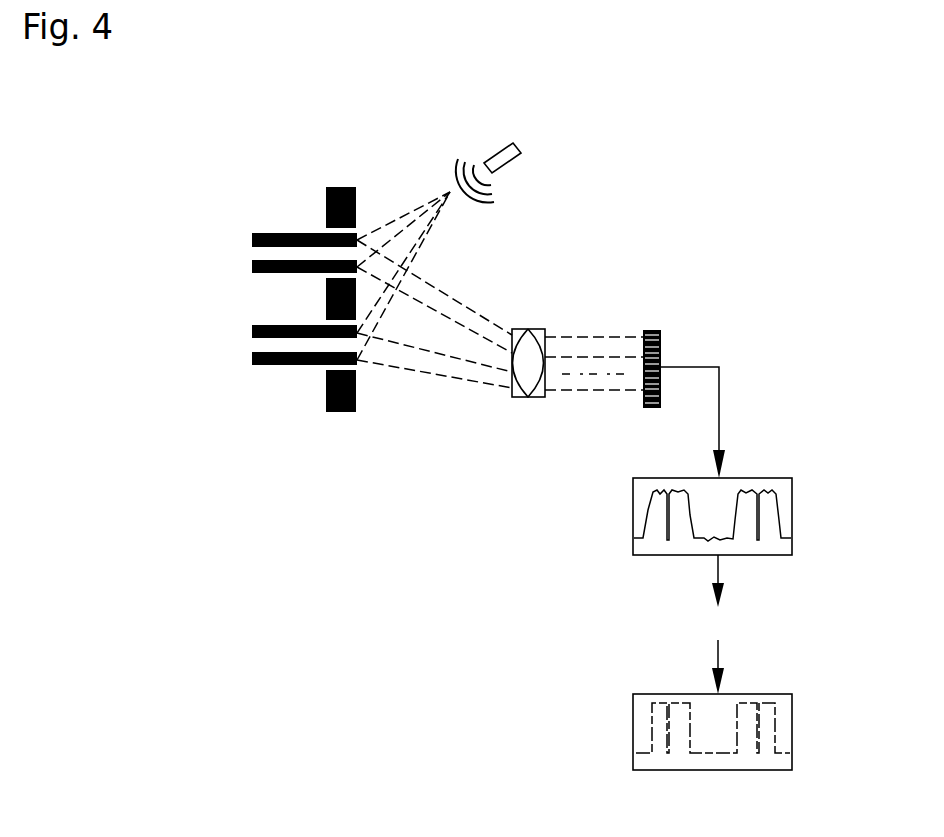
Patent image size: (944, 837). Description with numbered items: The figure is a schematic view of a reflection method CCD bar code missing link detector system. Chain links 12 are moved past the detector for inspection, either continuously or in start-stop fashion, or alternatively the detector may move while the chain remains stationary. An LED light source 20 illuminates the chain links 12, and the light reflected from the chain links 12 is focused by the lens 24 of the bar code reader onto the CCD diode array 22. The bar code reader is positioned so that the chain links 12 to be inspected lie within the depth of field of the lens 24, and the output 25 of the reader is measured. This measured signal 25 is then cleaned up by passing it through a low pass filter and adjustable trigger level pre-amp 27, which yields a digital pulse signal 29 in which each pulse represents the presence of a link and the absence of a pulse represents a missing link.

The chain links 12 is at (250, 282).
The LED light source 20 is at (527, 145).
The CCD diode array 22 is at (677, 343).
The lens 24 is at (553, 328).
The output 25 is at (632, 517).
The low pass filter and adjustable trigger level pre-amp 27 is at (610, 617).
The digital pulse signal 29 is at (628, 723).